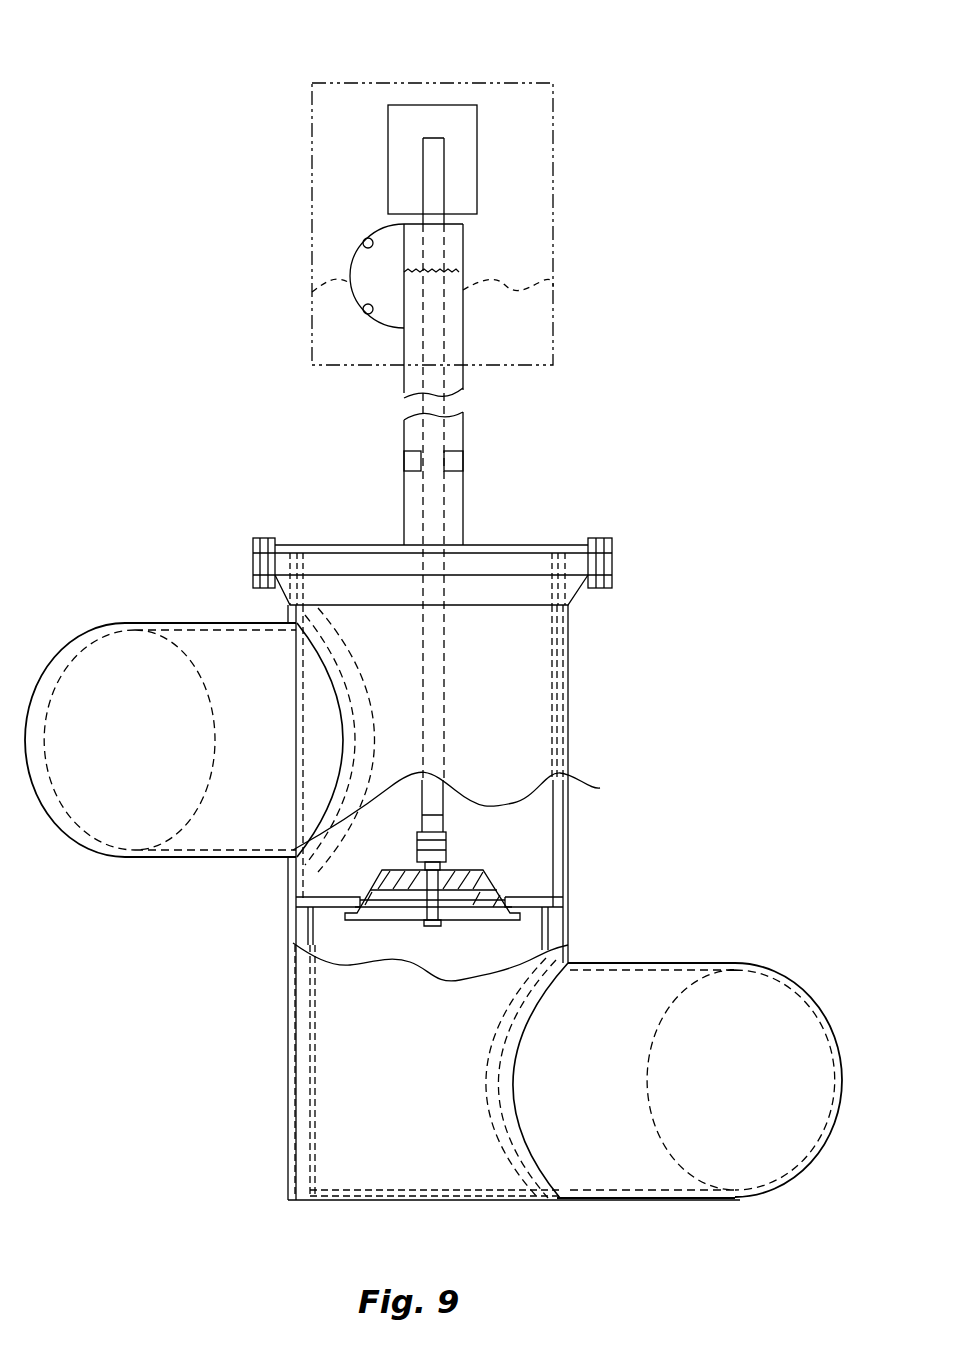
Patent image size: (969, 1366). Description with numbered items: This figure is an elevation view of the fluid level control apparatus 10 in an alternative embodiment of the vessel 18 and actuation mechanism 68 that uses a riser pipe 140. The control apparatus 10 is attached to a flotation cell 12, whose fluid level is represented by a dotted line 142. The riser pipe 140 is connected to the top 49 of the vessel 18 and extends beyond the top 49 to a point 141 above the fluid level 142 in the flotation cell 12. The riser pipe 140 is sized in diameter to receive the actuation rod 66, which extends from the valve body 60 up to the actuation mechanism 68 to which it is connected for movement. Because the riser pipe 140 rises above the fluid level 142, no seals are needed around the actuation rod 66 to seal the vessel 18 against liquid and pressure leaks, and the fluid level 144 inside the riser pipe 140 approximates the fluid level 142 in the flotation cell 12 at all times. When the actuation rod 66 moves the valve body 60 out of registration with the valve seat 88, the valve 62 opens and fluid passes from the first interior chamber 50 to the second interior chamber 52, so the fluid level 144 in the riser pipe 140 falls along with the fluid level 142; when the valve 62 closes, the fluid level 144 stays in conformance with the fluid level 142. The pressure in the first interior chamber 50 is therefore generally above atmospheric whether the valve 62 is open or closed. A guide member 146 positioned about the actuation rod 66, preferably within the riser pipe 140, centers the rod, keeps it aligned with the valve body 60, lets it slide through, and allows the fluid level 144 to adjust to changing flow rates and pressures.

The control apparatus 10 is at (786, 790).
The flotation cell 12 is at (530, 148).
The vessel 18 is at (568, 672).
The top 49 is at (548, 545).
The first interior chamber 50 is at (543, 800).
The second interior chamber 52 is at (450, 958).
The valve body 60 is at (472, 862).
The valve 62 is at (338, 923).
The actuation rod 66 is at (438, 437).
The actuation mechanism 68 is at (385, 108).
The valve seat 88 is at (548, 935).
The riser pipe 140 is at (463, 510).
The point above the fluid level 141 is at (463, 236).
The fluid level 142 is at (553, 288).
The fluid level in the riser pipe 144 is at (416, 275).
The guide member 146 is at (408, 458).